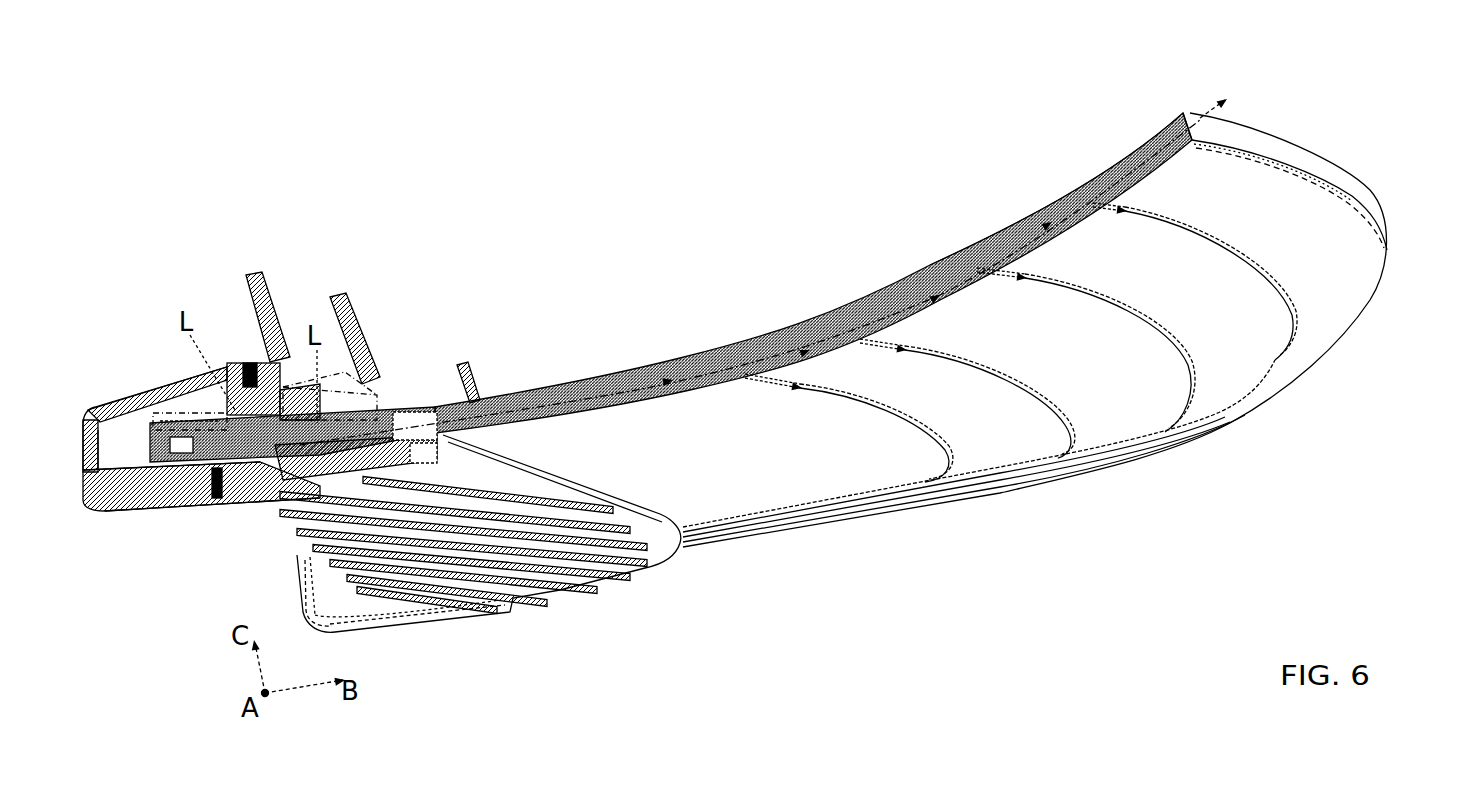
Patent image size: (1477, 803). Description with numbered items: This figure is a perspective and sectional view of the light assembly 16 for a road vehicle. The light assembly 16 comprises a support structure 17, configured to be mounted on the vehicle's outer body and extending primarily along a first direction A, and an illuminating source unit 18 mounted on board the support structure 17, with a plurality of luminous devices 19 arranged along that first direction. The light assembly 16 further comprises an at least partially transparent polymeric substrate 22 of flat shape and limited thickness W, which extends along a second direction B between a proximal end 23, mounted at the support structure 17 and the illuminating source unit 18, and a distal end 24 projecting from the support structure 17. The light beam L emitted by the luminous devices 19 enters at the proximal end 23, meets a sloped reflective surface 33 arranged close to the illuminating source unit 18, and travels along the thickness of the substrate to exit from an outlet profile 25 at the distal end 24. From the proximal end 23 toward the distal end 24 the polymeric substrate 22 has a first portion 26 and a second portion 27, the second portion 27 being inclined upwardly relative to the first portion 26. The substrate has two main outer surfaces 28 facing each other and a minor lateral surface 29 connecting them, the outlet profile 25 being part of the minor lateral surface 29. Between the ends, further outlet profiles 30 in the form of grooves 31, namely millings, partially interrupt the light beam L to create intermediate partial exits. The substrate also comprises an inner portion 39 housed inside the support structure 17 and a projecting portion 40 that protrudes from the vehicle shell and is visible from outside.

The light assembly 16 is at (485, 274).
The support structure 17 is at (172, 390).
The illuminating source unit 18 is at (219, 414).
The luminous devices 19 is at (252, 411).
The polymeric substrate 22 is at (638, 382).
The proximal end 23 is at (176, 466).
The distal end 24 is at (1247, 119).
The outlet profile 25 is at (1295, 157).
The first portion 26 is at (654, 477).
The second portion 27 is at (1039, 194).
The main outer surfaces 28 is at (835, 320).
The minor lateral surface 29 is at (1350, 181).
The further outlet profiles 30 is at (1233, 235).
The grooves 31 is at (800, 385).
The sloped reflective surface 33 is at (233, 466).
The inner portion 39 is at (262, 474).
The projecting portion 40 is at (1067, 491).